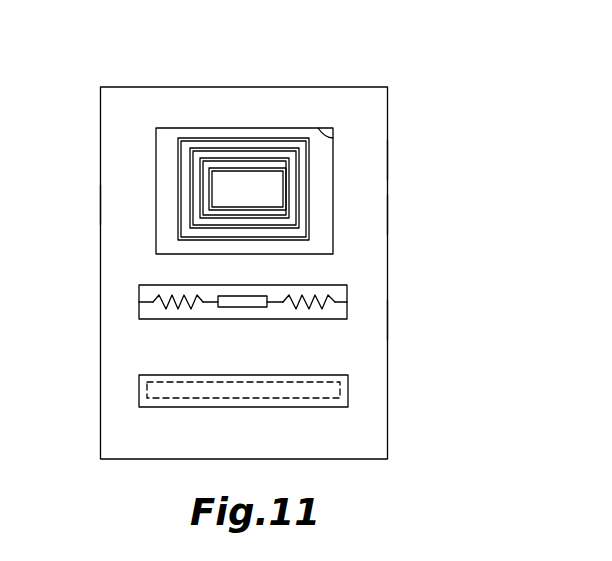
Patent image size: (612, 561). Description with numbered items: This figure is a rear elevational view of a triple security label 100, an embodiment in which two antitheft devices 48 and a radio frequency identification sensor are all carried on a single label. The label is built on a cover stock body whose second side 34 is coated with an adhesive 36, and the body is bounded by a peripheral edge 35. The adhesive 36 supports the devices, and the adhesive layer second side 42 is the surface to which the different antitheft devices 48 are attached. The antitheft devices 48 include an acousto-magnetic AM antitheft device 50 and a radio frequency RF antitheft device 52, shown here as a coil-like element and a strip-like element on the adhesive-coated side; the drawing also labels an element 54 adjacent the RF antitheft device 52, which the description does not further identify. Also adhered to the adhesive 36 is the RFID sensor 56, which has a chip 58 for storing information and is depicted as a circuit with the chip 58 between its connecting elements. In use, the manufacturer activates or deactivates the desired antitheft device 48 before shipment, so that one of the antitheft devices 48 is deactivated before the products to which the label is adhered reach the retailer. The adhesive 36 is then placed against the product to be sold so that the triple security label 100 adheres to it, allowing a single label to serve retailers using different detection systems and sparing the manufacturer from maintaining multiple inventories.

The triple security label 100 is at (375, 111).
The second side 34 is at (375, 163).
The adhesive 36 is at (375, 217).
The peripheral edge 35 is at (389, 323).
The adhesive layer second side 42 is at (98, 208).
The antitheft devices 48 is at (291, 248).
The AM antitheft device 50 is at (183, 407).
The RF antitheft device 52 is at (225, 133).
The inlay 54 is at (281, 133).
The RFID sensor 56 is at (318, 310).
The chip 58 is at (243, 299).